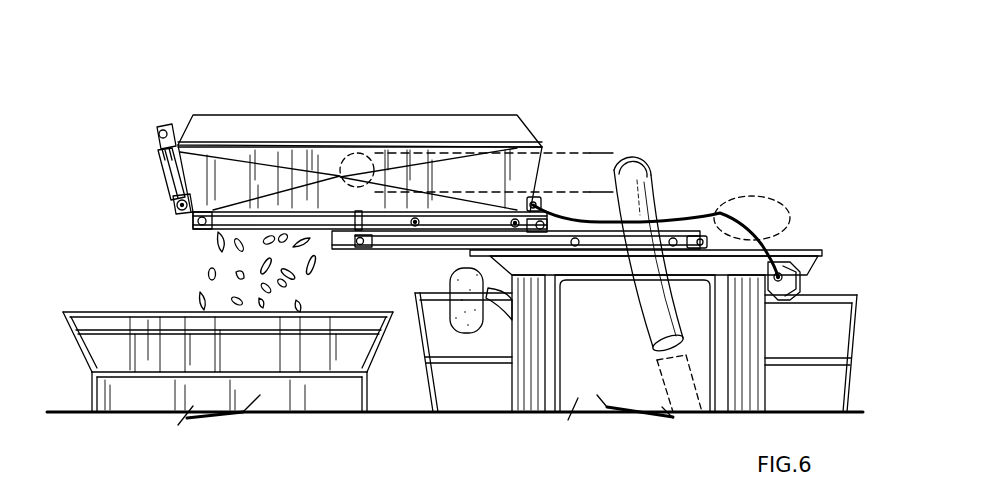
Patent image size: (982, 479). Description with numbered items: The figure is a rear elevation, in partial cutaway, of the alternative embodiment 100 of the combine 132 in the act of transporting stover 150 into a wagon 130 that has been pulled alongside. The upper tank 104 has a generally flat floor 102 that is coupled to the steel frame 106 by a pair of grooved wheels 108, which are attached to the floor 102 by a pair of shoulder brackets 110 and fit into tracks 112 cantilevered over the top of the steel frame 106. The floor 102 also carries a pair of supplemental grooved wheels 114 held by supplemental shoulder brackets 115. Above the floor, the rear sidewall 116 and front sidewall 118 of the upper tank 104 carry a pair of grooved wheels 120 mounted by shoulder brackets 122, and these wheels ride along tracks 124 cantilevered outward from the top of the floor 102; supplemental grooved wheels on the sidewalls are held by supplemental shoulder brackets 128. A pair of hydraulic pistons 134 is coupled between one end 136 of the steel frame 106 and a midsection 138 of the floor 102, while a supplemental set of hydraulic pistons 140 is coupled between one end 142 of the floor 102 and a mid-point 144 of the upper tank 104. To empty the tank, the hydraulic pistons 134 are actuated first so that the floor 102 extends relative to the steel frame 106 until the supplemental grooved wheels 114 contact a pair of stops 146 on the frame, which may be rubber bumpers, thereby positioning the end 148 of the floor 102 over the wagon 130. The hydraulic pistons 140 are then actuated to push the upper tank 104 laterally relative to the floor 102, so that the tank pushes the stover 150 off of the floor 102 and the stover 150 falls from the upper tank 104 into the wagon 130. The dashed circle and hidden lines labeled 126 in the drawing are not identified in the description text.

The alternative embodiment 100 is at (512, 78).
The floor 102 is at (257, 215).
The upper tank 104 is at (384, 97).
The steel frame 106 is at (765, 255).
The grooved wheels 108 is at (745, 197).
The shoulder brackets 110 is at (665, 232).
The tracks 112 is at (487, 259).
The supplemental grooved wheels 114 is at (573, 182).
The supplemental shoulder brackets 115 is at (646, 154).
The rear sidewall 116 is at (283, 153).
The front sidewall 118 is at (297, 128).
The grooved wheels 120 is at (503, 218).
The shoulder brackets 122 is at (543, 218).
The tracks 124 is at (338, 232).
The drive roller 126 is at (463, 213).
The supplemental shoulder brackets 128 is at (417, 212).
The wagon 130 is at (130, 312).
The combine 132 is at (577, 400).
The hydraulic pistons 134 is at (539, 243).
The end 136 is at (803, 258).
The midsection 138 is at (575, 240).
The supplemental hydraulic pistons 140 is at (257, 215).
The end 142 is at (786, 214).
The mid-point 144 is at (360, 214).
The stops 146 is at (632, 293).
The end 148 is at (195, 214).
The stover 150 is at (200, 294).